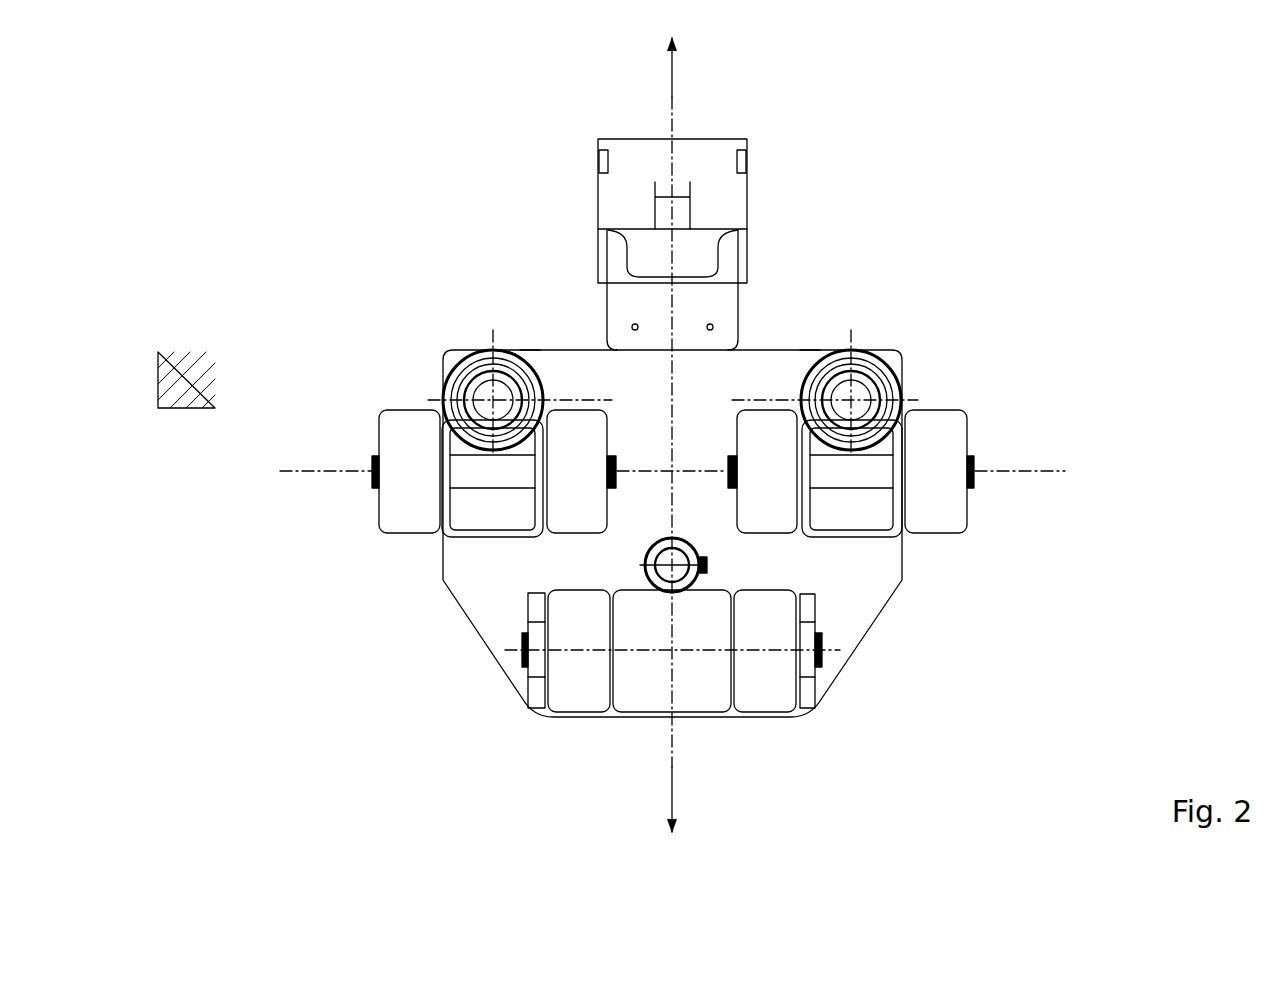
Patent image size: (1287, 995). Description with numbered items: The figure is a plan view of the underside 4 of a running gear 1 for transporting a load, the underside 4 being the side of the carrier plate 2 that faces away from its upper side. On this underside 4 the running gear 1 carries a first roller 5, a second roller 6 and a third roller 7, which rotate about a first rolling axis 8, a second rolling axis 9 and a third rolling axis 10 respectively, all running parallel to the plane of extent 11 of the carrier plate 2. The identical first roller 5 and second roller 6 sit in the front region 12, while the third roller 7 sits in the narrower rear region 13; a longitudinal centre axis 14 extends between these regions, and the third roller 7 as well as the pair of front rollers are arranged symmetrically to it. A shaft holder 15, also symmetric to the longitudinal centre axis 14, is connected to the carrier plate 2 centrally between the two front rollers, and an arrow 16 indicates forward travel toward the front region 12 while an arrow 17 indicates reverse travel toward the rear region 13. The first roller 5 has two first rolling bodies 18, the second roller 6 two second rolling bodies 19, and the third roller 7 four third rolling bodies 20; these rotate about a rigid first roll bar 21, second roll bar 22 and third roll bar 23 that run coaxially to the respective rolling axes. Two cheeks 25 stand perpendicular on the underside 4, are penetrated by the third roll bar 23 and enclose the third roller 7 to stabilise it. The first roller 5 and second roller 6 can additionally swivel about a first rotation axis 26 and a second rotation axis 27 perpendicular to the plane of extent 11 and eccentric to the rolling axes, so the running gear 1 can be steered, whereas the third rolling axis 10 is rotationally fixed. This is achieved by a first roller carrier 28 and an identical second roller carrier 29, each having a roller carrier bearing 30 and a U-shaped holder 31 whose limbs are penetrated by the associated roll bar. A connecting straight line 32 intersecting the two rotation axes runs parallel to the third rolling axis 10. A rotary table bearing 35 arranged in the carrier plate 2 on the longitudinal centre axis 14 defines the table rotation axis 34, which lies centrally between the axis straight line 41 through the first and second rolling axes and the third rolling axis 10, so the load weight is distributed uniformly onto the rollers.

The running gear 1 is at (1200, 240).
The carrier plate 2 is at (763, 338).
The underside 4 is at (878, 605).
The first roller 5 is at (988, 378).
The second roller 6 is at (356, 378).
The third roller 7 is at (636, 750).
The first rolling axis 8 is at (1018, 475).
The second rolling axis 9 is at (327, 475).
The third rolling axis 10 is at (768, 660).
The plane of extent 11 is at (175, 385).
The front region 12 is at (1112, 381).
The rear region 13 is at (1075, 693).
The longitudinal centre axis 14 is at (665, 110).
The shaft holder 15 is at (568, 199).
The arrow 16 is at (672, 62).
The arrow 17 is at (672, 808).
The first rolling bodies 18 is at (947, 435).
The second rolling bodies 19 is at (410, 430).
The third rolling bodies 20 is at (575, 690).
The first roll bar 21 is at (868, 480).
The second roll bar 22 is at (475, 485).
The third roll bar 23 is at (548, 660).
The cheeks 25 is at (530, 700).
The first rotation axis 26 is at (810, 345).
The second rotation axis 27 is at (528, 343).
The first roller carrier 28 is at (860, 282).
The second roller carrier 29 is at (474, 294).
The roller carrier bearing 30 is at (452, 352).
The U-shaped holder 31 is at (492, 540).
The connecting straight line 32 is at (568, 390).
The table rotation axis 34 is at (697, 545).
The rotary table bearing 35 is at (626, 566).
The axis straight line 41 is at (622, 476).